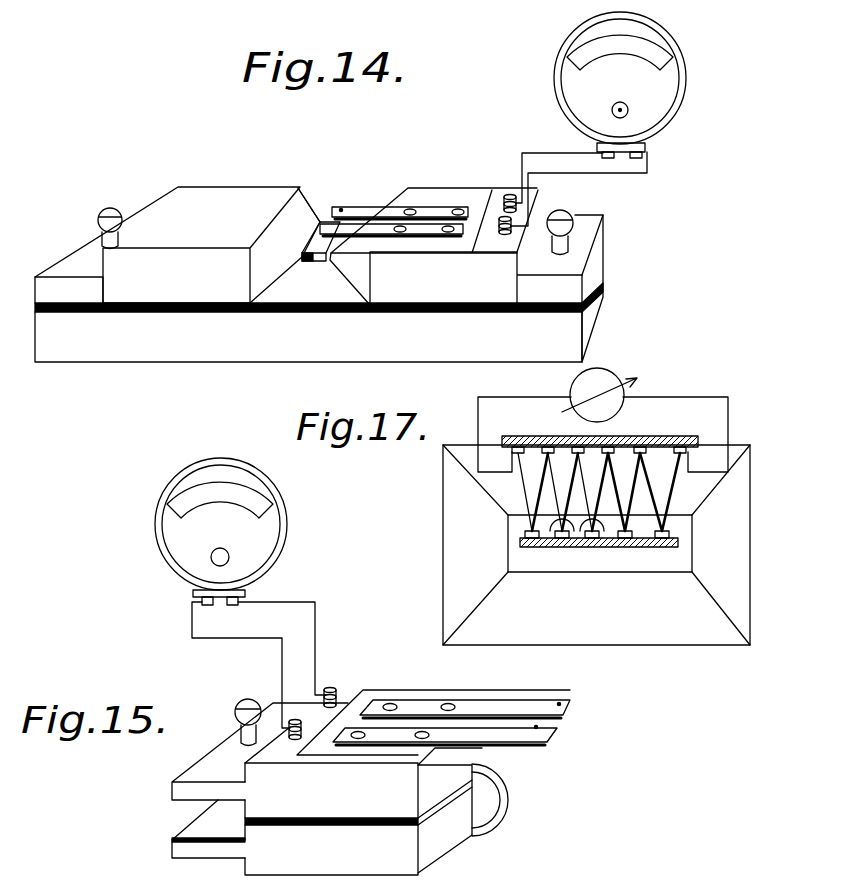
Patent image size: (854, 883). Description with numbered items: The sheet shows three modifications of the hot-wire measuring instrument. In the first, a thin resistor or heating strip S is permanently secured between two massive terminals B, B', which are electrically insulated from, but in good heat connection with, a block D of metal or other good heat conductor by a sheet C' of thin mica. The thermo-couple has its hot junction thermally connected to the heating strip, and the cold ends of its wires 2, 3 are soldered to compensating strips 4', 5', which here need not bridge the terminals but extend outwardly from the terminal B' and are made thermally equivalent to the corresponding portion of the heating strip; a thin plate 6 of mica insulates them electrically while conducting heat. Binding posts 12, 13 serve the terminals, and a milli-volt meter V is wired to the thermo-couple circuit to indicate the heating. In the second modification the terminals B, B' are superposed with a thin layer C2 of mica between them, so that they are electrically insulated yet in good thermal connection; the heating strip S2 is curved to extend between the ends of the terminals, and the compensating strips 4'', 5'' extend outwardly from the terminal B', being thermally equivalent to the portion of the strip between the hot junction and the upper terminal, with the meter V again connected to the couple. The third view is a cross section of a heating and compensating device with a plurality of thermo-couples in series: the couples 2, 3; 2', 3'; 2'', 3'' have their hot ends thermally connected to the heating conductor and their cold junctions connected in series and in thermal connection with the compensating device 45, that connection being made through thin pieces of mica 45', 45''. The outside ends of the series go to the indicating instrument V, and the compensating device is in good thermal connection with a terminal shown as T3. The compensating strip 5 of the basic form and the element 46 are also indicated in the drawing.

In FIG. 14, the binding post 12 is at (100, 210).
In FIG. 14, the binding post 13 is at (563, 215).
In FIG. 14, the thermo-couple wire 2 is at (293, 236).
In FIG. 17, the thermo-couple wire 2 is at (517, 492).
In FIG. 15, the thermo-couple wire 2 is at (519, 748).
In FIG. 14, the thermo-couple wire 3 is at (320, 199).
In FIG. 17, the thermo-couple wire 3 is at (511, 492).
In FIG. 15, the thermo-couple wire 3 is at (575, 733).
In FIG. 14, the compensating strip 4' is at (400, 204).
In FIG. 14, the compensating strip 5' is at (391, 251).
In FIG. 14, the insulating plate 6 is at (448, 200).
In FIG. 14, the resistor strip S is at (313, 272).
In FIG. 14, the terminal B is at (177, 245).
In FIG. 15, the terminal B is at (322, 837).
In FIG. 14, the terminal B' is at (466, 247).
In FIG. 15, the terminal B' is at (327, 767).
In FIG. 14, the mica sheet C' is at (319, 319).
In FIG. 14, the block D is at (319, 288).
In FIG. 14, the milli-volt meter V is at (658, 107).
In FIG. 17, the milli-volt meter V is at (603, 411).
In FIG. 15, the milli-volt meter V is at (160, 530).
In FIG. 17, the compensating device 45 is at (600, 427).
In FIG. 17, the mica piece 45' is at (637, 428).
In FIG. 17, the mica piece 45'' is at (622, 536).
In FIG. 17, the lower terminal blocks 46 is at (662, 532).
In FIG. 17, the thermo-couple wire 2' is at (540, 509).
In FIG. 17, the thermo-couple wire 3' is at (573, 509).
In FIG. 17, the thermo-couple wire 2'' is at (581, 509).
In FIG. 17, the thermo-couple wire 3'' is at (616, 509).
In FIG. 17, the compensating strip 5 is at (660, 509).
In FIG. 17, the terminal T3 is at (727, 630).
In FIG. 15, the compensating strip 4'' is at (436, 709).
In FIG. 15, the compensating strip 5'' is at (445, 701).
In FIG. 15, the heating strip S2 is at (515, 795).
In FIG. 15, the mica layer C2 is at (382, 823).